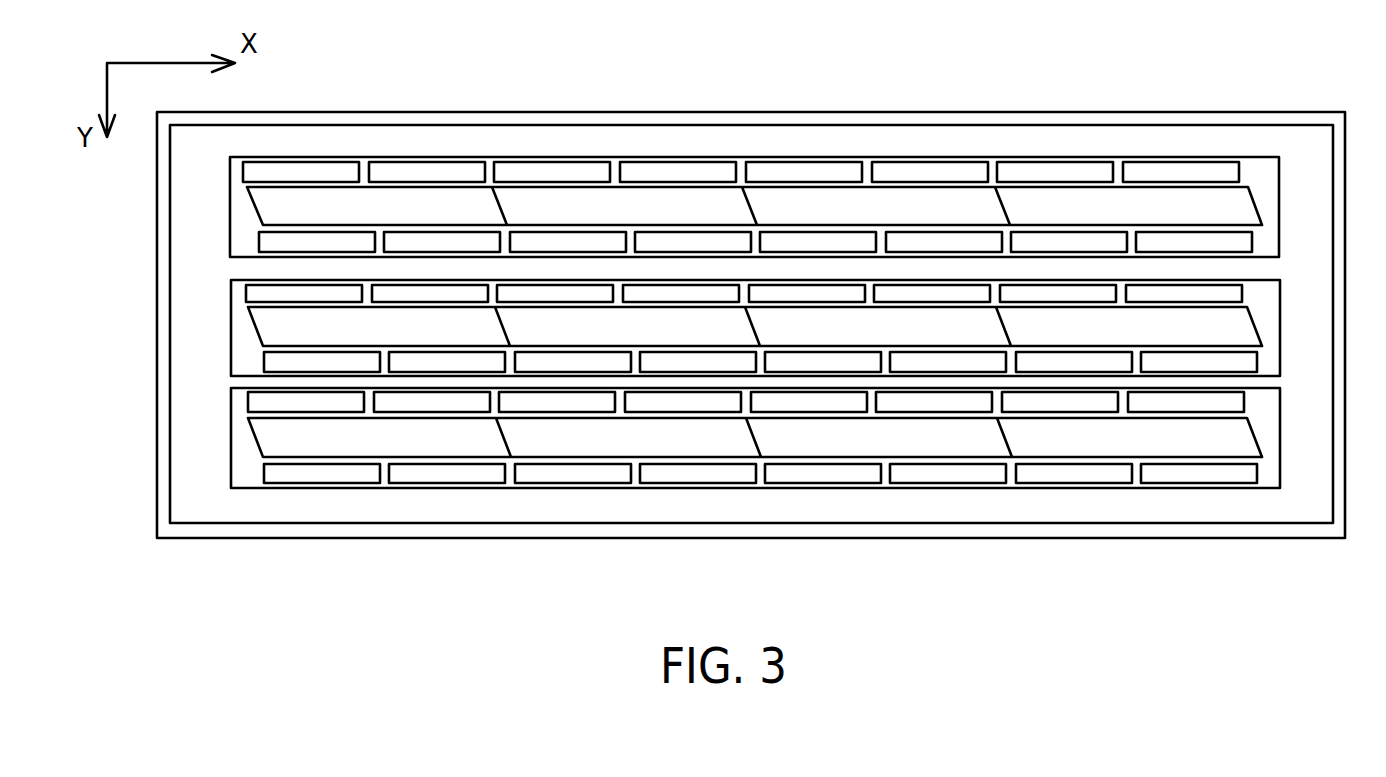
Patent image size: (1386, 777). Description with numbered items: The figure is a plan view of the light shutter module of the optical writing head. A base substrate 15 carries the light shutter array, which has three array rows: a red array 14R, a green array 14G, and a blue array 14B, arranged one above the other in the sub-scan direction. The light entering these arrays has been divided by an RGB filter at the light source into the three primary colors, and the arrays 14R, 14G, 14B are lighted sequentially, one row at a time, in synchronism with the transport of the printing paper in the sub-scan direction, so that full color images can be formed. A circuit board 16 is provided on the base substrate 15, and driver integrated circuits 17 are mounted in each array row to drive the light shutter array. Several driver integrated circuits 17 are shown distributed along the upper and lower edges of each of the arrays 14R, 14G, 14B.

The base substrate 15 is at (730, 112).
The circuit board 16 is at (843, 138).
The red array 14R is at (450, 200).
The green array 14G is at (263, 333).
The blue array 14B is at (343, 443).
The driver integrated circuit 17 is at (563, 238).